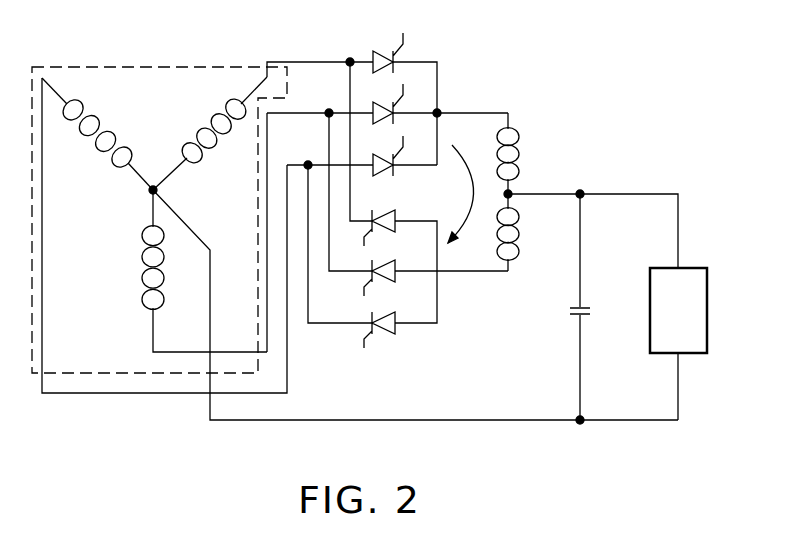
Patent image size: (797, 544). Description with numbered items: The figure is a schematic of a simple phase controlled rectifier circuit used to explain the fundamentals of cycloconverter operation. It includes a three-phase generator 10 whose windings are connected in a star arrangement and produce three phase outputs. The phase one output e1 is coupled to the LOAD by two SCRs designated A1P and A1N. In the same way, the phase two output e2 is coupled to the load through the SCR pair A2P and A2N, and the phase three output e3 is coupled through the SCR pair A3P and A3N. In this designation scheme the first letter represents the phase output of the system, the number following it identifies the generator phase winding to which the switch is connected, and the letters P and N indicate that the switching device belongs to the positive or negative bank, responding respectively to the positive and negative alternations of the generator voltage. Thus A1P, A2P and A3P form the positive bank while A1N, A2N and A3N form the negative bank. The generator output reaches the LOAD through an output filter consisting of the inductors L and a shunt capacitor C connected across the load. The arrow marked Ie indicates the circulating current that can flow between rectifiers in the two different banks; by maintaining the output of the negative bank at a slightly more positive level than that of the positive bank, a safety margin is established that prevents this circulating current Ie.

The three-phase generator 10 is at (157, 67).
The phase 1 generator output e1 is at (210, 133).
The phase 2 generator output e2 is at (204, 273).
The phase 3 generator output e3 is at (97, 134).
The positive bank SCR for phase 1 A1P is at (378, 46).
The positive bank SCR for phase 2 A2P is at (379, 102).
The positive bank SCR for phase 3 A3P is at (379, 154).
The negative bank SCR for phase 1 A1N is at (373, 216).
The negative bank SCR for phase 2 A2N is at (390, 267).
The negative bank SCR for phase 3 A3N is at (390, 319).
The inductor L is at (515, 192).
The circulating current Ie is at (458, 194).
The shunt capacitor C is at (591, 307).
The load LOAD is at (678, 344).